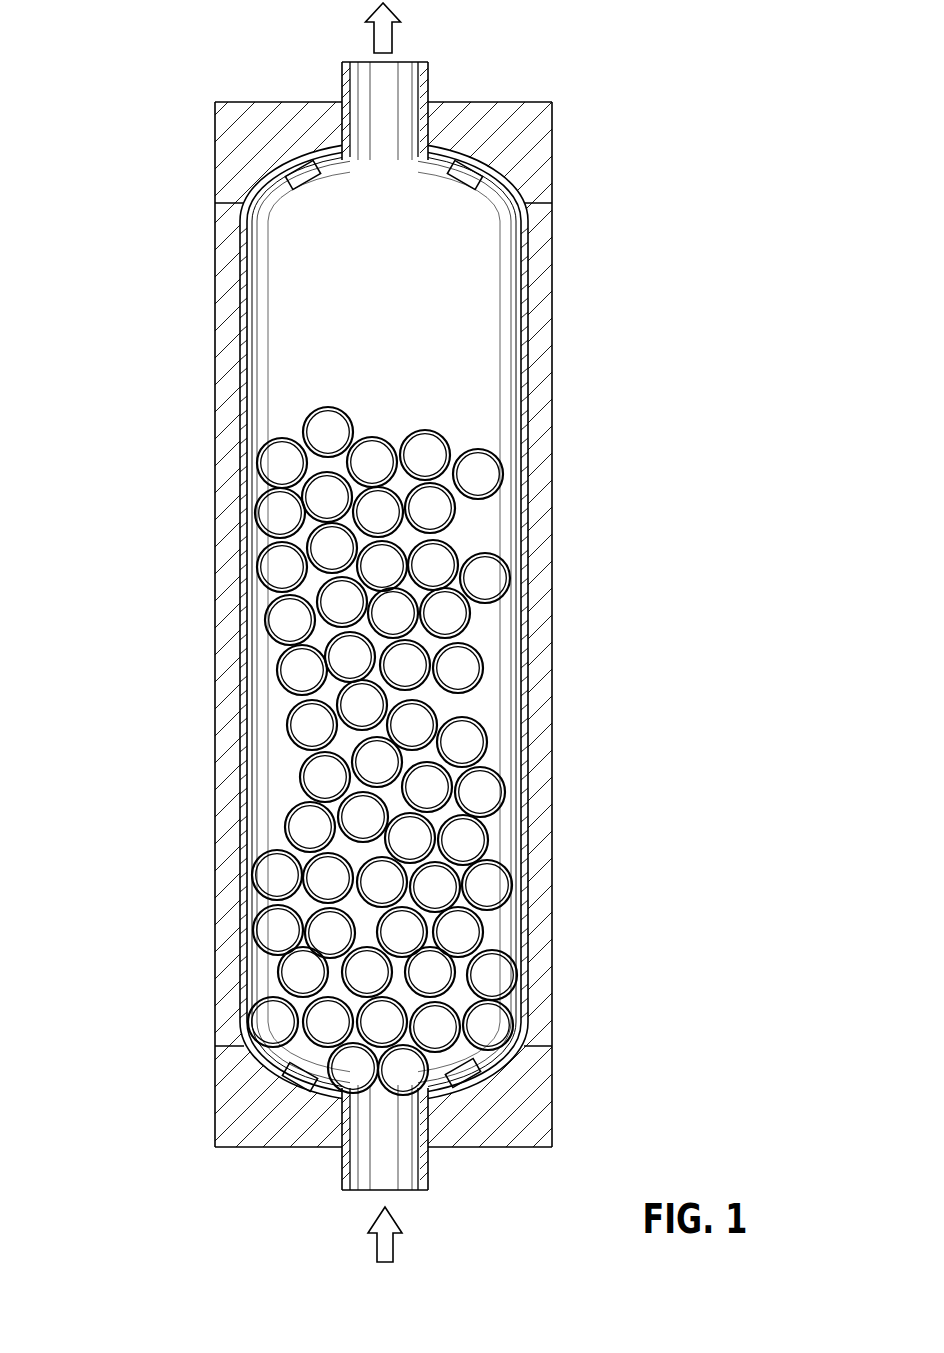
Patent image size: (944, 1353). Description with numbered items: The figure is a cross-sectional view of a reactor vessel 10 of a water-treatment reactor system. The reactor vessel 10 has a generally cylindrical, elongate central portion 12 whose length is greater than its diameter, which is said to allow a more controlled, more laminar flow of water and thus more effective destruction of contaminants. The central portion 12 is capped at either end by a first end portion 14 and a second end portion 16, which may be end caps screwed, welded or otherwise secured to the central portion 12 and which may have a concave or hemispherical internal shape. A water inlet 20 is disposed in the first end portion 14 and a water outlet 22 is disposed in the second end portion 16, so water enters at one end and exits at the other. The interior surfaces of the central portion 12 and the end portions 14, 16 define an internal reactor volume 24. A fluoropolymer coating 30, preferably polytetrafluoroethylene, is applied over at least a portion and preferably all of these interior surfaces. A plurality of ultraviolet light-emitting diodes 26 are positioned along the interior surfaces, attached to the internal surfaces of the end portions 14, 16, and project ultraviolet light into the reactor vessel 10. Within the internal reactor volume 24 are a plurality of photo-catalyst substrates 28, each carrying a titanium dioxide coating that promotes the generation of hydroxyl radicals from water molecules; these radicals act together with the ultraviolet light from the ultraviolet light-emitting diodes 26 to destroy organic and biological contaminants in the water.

The reactor vessel 10 is at (146, 462).
The central portion 12 is at (540, 450).
The first end portion 14 is at (260, 1133).
The second end portion 16 is at (537, 157).
The water inlet 20 is at (388, 1192).
The water outlet 22 is at (372, 80).
The internal reactor volume 24 is at (284, 303).
The ultraviolet light-emitting diodes 26 is at (302, 181).
The photo-catalyst substrates 28 is at (455, 676).
The fluoropolymer coating 30 is at (527, 270).